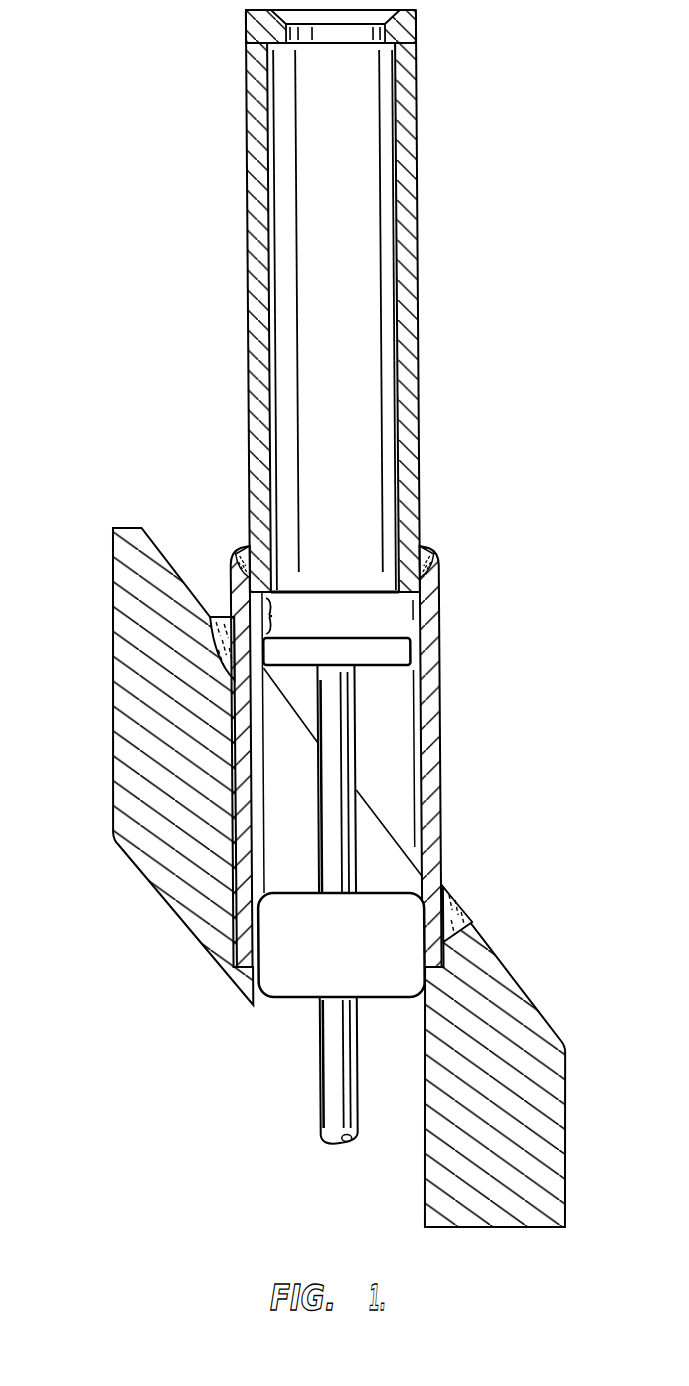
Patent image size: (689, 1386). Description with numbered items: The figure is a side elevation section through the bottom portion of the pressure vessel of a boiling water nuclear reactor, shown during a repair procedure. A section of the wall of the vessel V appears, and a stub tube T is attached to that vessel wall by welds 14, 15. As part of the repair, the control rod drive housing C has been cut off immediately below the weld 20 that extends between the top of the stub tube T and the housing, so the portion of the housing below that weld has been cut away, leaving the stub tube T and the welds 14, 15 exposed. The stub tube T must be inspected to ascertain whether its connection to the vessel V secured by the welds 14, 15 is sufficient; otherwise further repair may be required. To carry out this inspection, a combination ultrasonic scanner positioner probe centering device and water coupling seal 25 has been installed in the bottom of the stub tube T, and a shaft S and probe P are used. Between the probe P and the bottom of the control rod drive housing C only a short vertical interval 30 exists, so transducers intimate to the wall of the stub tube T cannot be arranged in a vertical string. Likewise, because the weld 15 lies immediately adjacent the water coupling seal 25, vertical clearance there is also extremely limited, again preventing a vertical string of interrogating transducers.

The control rod drive housing C is at (421, 248).
The stub tube T is at (441, 792).
The probe P is at (373, 675).
The shaft S is at (355, 738).
The vessel V is at (178, 834).
The weld 14 is at (213, 617).
The weld 15 is at (452, 940).
The weld 20 is at (245, 550).
The combination ultrasonic scanner positioner probe centering device and water coupl 25 is at (363, 960).
The short vertical interval 30 is at (292, 616).